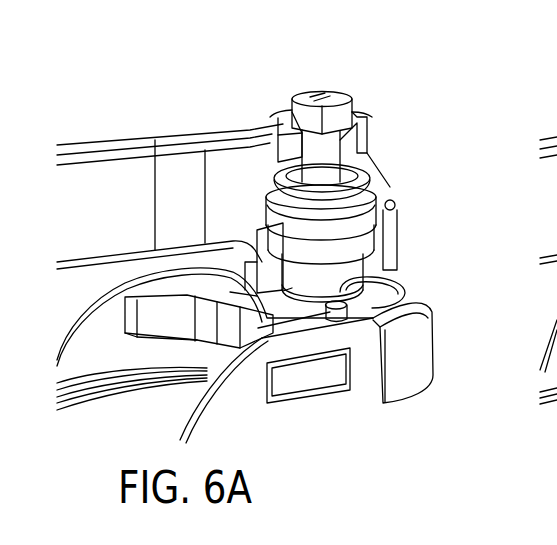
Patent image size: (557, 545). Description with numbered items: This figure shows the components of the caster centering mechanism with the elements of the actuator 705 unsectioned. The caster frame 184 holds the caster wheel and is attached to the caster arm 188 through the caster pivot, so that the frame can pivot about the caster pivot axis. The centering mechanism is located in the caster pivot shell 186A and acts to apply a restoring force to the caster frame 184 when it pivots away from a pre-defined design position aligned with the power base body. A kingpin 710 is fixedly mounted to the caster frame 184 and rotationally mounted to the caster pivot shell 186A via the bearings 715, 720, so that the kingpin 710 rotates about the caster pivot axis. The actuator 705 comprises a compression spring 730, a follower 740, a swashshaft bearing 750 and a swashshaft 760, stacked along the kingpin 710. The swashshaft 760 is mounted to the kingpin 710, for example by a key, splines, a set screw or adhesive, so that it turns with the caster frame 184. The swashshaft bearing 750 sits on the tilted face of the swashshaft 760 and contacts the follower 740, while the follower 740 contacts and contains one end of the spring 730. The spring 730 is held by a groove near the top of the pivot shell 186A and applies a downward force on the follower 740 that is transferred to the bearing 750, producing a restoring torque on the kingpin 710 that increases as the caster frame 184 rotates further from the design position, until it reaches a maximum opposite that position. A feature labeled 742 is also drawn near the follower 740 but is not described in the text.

The caster frame 184 is at (327, 415).
The caster pivot shell 186A is at (375, 127).
The caster arm 188 is at (83, 182).
The actuator 705 is at (490, 133).
The kingpin 710 is at (322, 95).
The bearing 715 is at (290, 140).
The bearing 720 is at (250, 268).
The compression spring 730 is at (355, 182).
The follower 740 is at (372, 217).
The pin 742 is at (395, 204).
The swashshaft bearing 750 is at (345, 240).
The swashshaft 760 is at (340, 268).